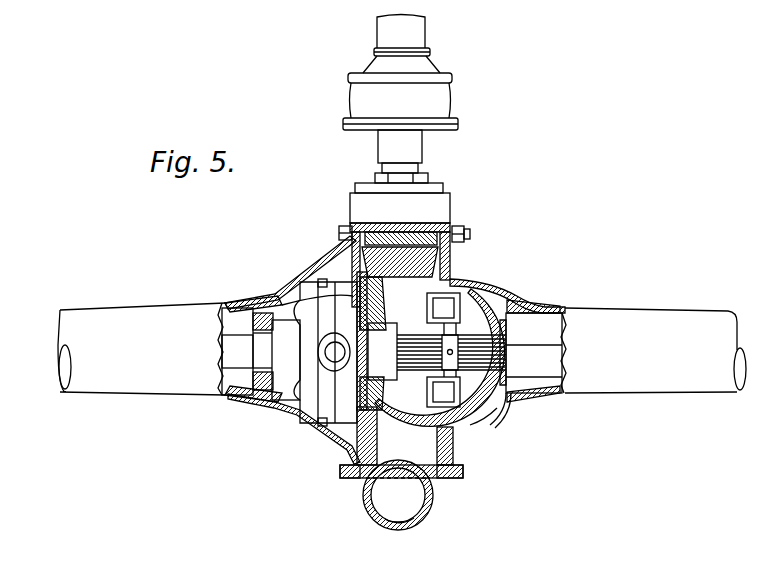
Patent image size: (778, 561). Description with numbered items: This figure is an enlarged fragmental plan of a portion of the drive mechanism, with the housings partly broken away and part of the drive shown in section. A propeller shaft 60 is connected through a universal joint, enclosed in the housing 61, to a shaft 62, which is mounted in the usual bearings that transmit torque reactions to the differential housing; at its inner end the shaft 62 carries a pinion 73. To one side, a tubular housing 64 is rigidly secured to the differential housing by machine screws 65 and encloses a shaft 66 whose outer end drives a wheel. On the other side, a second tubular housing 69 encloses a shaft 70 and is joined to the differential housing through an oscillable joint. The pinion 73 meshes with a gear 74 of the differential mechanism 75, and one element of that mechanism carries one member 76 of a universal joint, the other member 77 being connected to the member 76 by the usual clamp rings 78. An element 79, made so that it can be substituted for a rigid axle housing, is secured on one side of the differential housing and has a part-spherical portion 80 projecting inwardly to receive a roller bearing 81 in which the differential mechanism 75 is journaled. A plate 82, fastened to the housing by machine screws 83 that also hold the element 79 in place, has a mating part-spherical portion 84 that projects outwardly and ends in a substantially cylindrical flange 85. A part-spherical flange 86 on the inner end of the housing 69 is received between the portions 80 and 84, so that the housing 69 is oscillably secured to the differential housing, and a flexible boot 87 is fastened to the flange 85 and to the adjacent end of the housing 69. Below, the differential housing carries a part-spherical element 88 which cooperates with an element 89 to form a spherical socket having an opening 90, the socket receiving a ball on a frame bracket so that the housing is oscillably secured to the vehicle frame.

The propeller shaft 60 is at (398, 32).
The housing 61 is at (440, 103).
The shaft 62 is at (408, 165).
The tubular housing 64 is at (128, 384).
The machine screws 65 is at (340, 232).
The shaft 66 is at (243, 355).
The tubular housing 69 is at (675, 383).
The shaft 70 is at (545, 360).
The pinion 73 is at (342, 266).
The gear 74 is at (352, 440).
The differential mechanism 75 is at (310, 393).
The member of universal joint 76 is at (386, 400).
The member of universal joint 77 is at (463, 327).
The clamp rings 78 is at (494, 286).
The element 79 is at (456, 226).
The part-spherical portion 80 is at (436, 350).
The roller bearing 81 is at (368, 308).
The plate 82 is at (455, 245).
The machine screws 83 is at (468, 231).
The part-spherical portion 84 is at (462, 283).
The cylindrical flange 85 is at (500, 430).
The part-spherical flange 86 is at (470, 425).
The flexible boot 87 is at (510, 418).
The part-spherical element 88 is at (432, 485).
The element 89 is at (370, 512).
The opening 90 is at (404, 527).